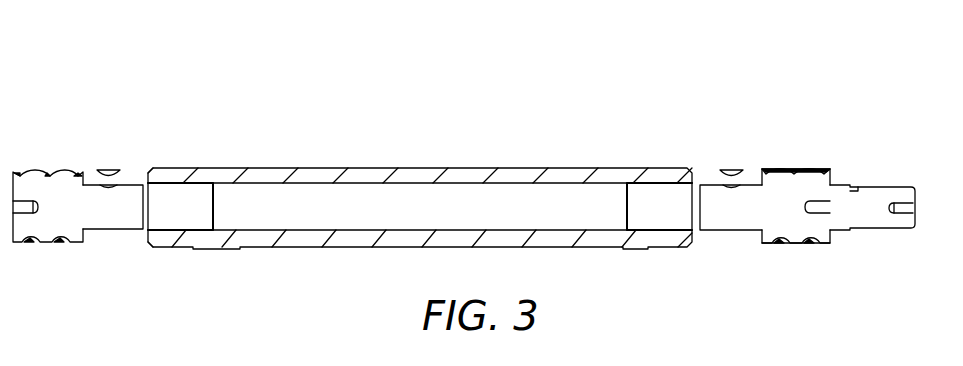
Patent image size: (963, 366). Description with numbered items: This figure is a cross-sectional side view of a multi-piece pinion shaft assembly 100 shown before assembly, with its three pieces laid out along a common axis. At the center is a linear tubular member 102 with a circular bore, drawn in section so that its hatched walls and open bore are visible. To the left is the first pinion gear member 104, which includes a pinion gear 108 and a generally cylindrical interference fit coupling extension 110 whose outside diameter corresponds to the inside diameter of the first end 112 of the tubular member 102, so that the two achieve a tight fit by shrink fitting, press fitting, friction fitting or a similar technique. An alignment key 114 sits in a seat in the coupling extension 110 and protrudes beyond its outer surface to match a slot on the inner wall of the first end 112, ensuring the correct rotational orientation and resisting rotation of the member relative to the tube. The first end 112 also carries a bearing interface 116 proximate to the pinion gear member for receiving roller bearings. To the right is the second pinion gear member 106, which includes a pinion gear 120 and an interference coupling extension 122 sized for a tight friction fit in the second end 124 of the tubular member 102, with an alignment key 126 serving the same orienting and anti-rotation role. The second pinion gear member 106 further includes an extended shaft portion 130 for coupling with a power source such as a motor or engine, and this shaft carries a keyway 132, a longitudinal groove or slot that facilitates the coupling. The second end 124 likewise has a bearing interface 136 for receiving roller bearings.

The multi-piece pinion shaft assembly 100 is at (656, 88).
The linear tubular member 102 is at (533, 167).
The first pinion gear member 104 is at (172, 70).
The second pinion gear member 106 is at (826, 125).
The pinion gear 108 is at (48, 172).
The interference fit coupling extension 110 is at (120, 230).
The first end 112 is at (189, 286).
The alignment key 114 is at (106, 171).
The bearing interface 116 is at (182, 168).
The pinion gear 120 is at (783, 244).
The interference coupling extension 122 is at (735, 231).
The second end 124 is at (650, 284).
The alignment key 126 is at (732, 171).
The extended shaft portion 130 is at (882, 229).
The keyway 132 is at (887, 186).
The bearing interface 136 is at (668, 167).